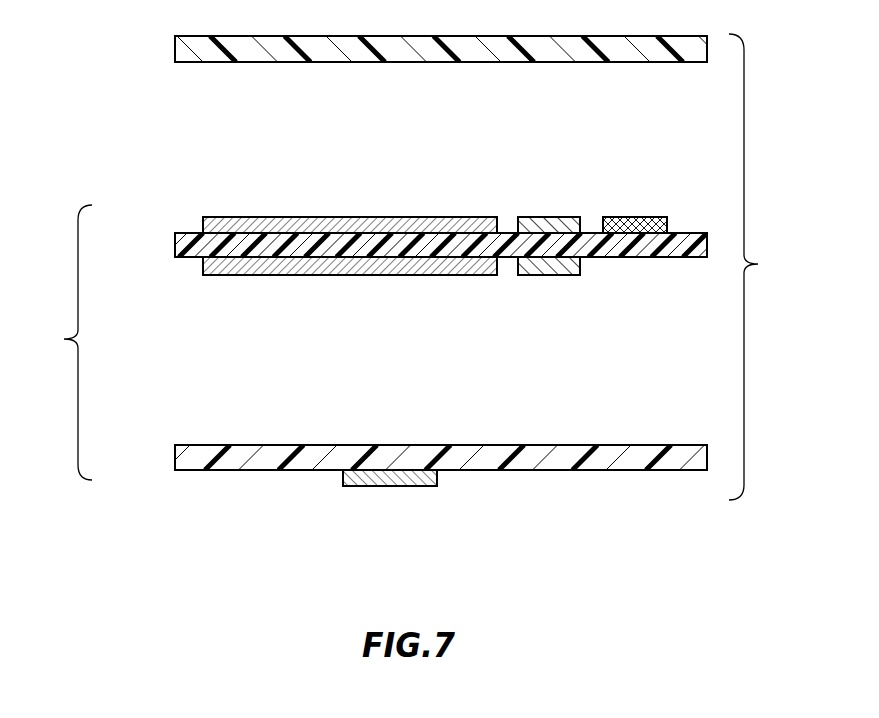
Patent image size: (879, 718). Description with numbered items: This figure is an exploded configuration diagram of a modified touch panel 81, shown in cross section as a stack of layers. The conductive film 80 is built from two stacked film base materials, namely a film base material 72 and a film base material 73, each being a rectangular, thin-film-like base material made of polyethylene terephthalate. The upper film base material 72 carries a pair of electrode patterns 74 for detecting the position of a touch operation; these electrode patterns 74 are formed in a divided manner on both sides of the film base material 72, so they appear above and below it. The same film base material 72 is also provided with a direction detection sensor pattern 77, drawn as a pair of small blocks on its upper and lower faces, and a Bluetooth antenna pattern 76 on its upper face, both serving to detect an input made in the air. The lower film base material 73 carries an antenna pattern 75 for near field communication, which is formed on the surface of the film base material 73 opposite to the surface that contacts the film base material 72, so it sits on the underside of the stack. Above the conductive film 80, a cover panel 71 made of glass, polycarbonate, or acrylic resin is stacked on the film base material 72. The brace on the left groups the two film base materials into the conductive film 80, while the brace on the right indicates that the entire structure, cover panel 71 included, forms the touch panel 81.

The cover panel 71 is at (175, 44).
The film base material 72 is at (175, 241).
The film base material 73 is at (175, 452).
The electrode patterns 74 is at (295, 217).
The antenna pattern 75 is at (385, 487).
The Bluetooth antenna pattern 76 is at (630, 217).
The direction detection sensor pattern 77 is at (547, 217).
The conductive film 80 is at (60, 342).
The touch panel 81 is at (761, 267).